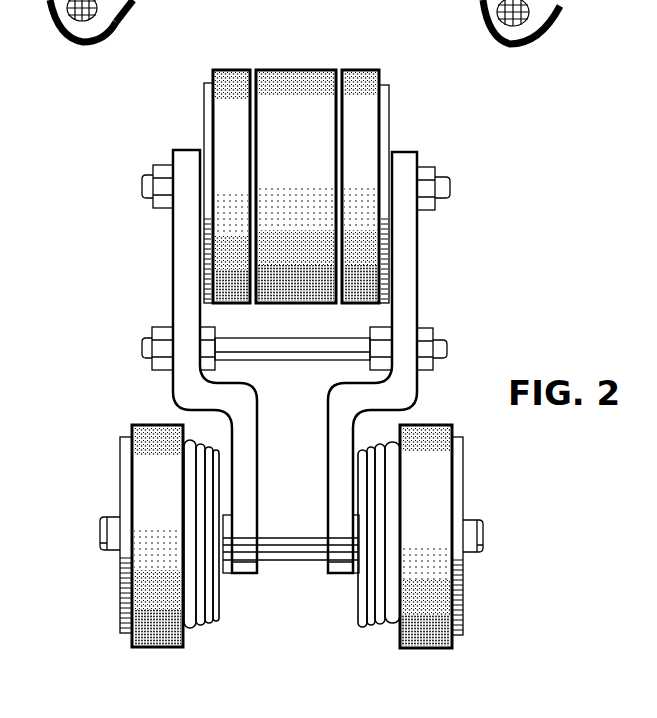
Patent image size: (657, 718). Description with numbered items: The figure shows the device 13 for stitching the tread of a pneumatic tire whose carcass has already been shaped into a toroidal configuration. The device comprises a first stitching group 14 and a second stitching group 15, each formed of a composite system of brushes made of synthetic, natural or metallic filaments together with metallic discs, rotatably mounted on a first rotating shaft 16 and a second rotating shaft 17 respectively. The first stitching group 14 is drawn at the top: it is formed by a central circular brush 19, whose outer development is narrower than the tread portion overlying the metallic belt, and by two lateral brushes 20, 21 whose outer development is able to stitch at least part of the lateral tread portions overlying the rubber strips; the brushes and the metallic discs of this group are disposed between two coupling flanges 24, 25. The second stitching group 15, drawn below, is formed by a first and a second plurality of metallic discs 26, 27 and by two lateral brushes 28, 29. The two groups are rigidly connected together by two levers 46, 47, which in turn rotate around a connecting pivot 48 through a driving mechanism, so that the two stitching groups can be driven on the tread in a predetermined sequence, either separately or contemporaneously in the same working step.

The device 13 is at (390, 125).
The first stitching group 14 is at (205, 85).
The second stitching group 15 is at (120, 457).
The first rotating shaft 16 is at (143, 184).
The second rotating shaft 17 is at (303, 518).
The central circular brush 19 is at (297, 78).
The lateral brush 20 is at (227, 70).
The lateral brush 21 is at (360, 70).
The coupling flange 24 is at (208, 118).
The coupling flange 25 is at (389, 107).
The first plurality of metallic discs 26 is at (223, 590).
The second plurality of metallic discs 27 is at (360, 605).
The lateral brush 28 is at (145, 583).
The lateral brush 29 is at (433, 468).
The lever 46 is at (182, 264).
The lever 47 is at (407, 268).
The connecting pivot 48 is at (143, 348).